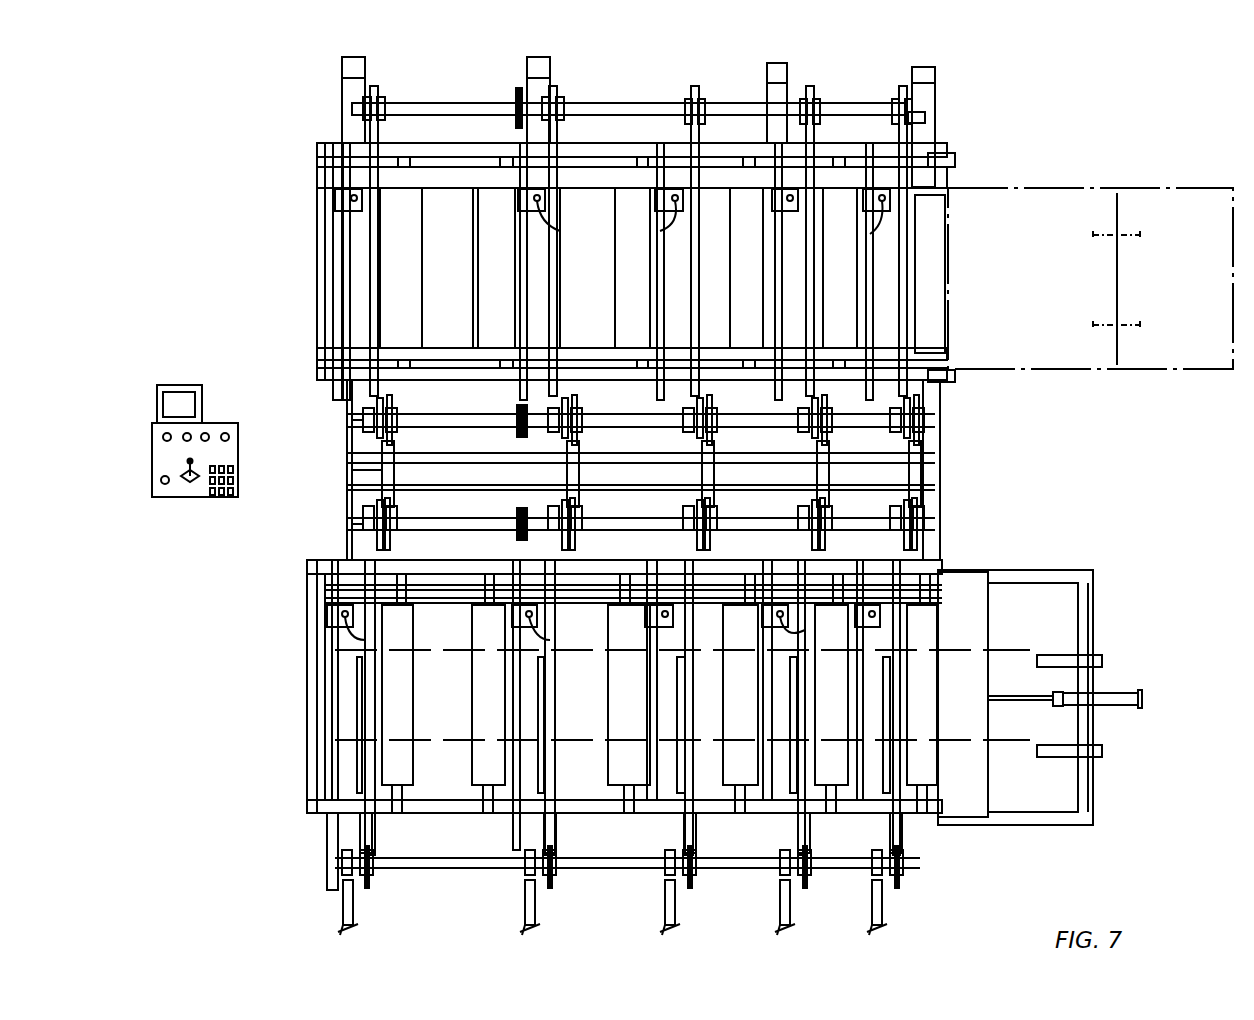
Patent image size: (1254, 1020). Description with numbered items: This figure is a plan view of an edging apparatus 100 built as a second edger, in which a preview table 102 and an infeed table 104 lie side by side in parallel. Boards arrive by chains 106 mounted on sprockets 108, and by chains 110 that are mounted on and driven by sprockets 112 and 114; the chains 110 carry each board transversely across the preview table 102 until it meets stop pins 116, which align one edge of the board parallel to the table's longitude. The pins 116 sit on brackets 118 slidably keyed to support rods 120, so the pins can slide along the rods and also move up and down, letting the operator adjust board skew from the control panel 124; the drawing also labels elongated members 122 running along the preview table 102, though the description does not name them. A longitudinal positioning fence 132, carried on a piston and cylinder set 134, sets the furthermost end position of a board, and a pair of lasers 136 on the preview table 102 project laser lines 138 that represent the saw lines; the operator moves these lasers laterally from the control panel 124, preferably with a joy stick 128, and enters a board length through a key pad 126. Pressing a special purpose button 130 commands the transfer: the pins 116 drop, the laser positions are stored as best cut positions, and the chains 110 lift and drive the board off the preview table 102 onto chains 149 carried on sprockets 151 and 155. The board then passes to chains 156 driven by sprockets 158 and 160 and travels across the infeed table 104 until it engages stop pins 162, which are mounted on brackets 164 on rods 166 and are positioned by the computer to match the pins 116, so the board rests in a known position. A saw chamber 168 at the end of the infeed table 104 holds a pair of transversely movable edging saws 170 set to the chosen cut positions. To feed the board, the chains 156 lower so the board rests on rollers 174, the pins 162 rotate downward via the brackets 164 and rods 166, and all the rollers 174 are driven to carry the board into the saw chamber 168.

The edging apparatus 100 is at (260, 134).
The preview table 102 is at (237, 667).
The infeed table 104 is at (272, 321).
The chains 106 is at (352, 906).
The sprockets 108 is at (345, 846).
The chains 110 is at (372, 836).
The sprockets 112 is at (372, 884).
The sprockets 114 is at (365, 506).
The stop pins 116 is at (345, 618).
The brackets 118 is at (327, 613).
The support rods 120 is at (333, 709).
The plate 122 is at (666, 709).
The control panel 124 is at (152, 456).
The key pad 126 is at (232, 478).
The joy stick 128 is at (192, 483).
The special purpose button 130 is at (224, 434).
The longitudinal positioning fence 132 is at (945, 631).
The piston and cylinder set 134 is at (1130, 693).
The lasers 136 is at (1100, 656).
The laser lines 138 is at (1003, 656).
The chains 149 is at (393, 477).
The sprockets 151 is at (390, 547).
The sprockets 155 is at (393, 403).
The chains 156 is at (375, 291).
The sprockets 158 is at (360, 439).
The sprockets 160 is at (376, 94).
The stop pins 162 is at (354, 201).
The brackets 164 is at (335, 197).
The rods 166 is at (338, 269).
The saw chamber 168 is at (1125, 188).
The edging saws 170 is at (1135, 243).
The rollers 174 is at (669, 270).